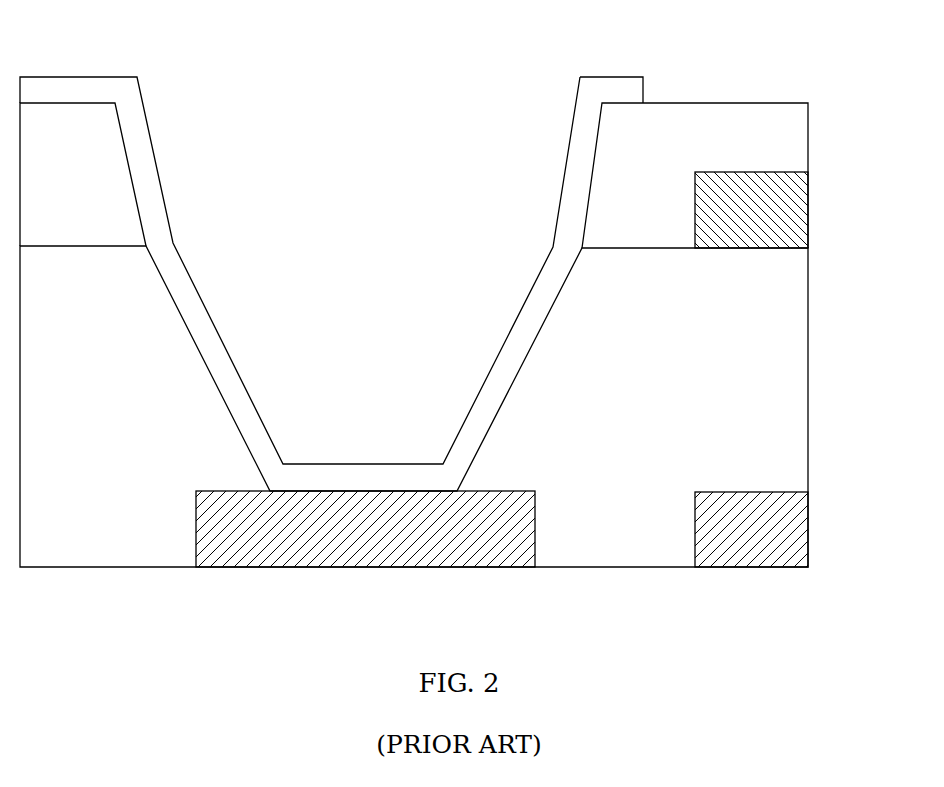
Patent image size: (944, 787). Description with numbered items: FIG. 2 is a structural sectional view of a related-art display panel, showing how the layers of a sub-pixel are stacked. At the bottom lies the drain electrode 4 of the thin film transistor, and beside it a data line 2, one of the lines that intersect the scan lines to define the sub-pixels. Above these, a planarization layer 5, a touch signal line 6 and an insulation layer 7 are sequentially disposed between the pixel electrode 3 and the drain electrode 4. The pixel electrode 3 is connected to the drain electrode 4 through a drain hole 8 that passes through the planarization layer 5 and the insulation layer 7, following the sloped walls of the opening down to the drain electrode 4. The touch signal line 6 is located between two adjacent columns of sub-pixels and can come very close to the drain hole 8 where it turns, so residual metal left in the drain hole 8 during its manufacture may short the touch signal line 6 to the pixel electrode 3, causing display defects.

The data line 2 is at (780, 540).
The pixel electrode 3 is at (627, 87).
The drain electrode 4 is at (487, 547).
The planarization layer 5 is at (787, 355).
The touch signal line 6 is at (782, 213).
The insulation layer 7 is at (778, 140).
The drain hole 8 is at (207, 367).